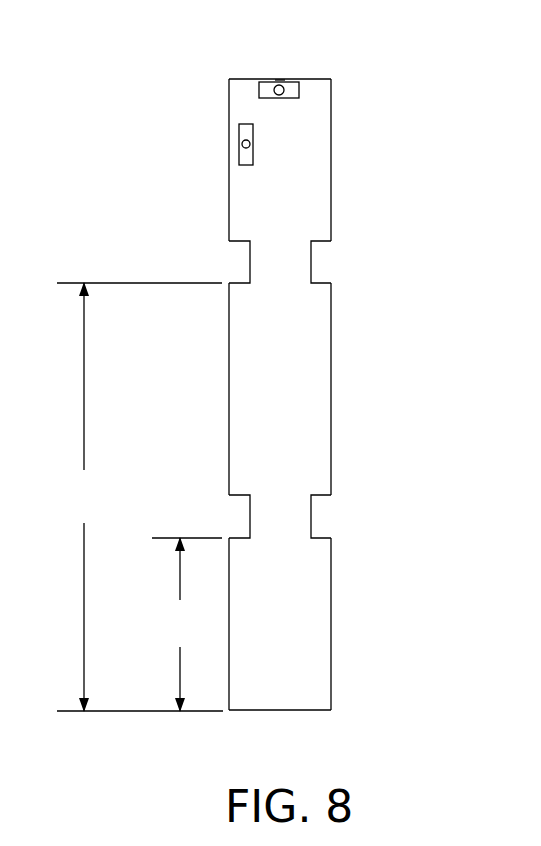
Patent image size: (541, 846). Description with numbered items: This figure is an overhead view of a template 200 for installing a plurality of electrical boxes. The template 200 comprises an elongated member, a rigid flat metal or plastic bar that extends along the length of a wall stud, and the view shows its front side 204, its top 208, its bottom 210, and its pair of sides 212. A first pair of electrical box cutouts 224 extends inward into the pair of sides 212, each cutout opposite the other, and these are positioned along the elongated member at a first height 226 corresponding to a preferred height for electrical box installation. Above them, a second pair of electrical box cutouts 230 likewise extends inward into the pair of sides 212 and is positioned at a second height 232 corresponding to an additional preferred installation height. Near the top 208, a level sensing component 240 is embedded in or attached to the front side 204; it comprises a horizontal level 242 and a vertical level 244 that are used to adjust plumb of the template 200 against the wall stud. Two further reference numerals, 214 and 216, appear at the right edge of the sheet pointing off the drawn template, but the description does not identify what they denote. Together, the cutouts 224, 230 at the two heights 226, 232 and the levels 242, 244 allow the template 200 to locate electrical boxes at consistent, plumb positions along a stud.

The template 200 is at (418, 152).
The front side 204 is at (309, 420).
The top 208 is at (237, 78).
The bottom 210 is at (310, 710).
The pair of sides 212 is at (230, 362).
The adjacent component 214 is at (540, 650).
The adjacent component 216 is at (540, 742).
The first pair of electrical box cutouts 224 is at (238, 515).
The first height 226 is at (158, 617).
The second pair of electrical box cutouts 230 is at (238, 260).
The second height 232 is at (67, 488).
The level sensing component 240 is at (283, 72).
The horizontal level 242 is at (292, 80).
The vertical level 244 is at (242, 144).